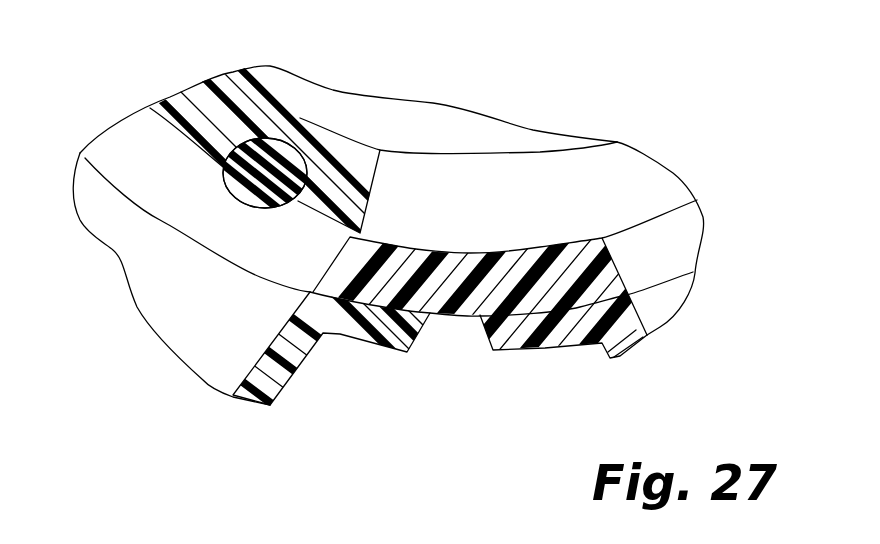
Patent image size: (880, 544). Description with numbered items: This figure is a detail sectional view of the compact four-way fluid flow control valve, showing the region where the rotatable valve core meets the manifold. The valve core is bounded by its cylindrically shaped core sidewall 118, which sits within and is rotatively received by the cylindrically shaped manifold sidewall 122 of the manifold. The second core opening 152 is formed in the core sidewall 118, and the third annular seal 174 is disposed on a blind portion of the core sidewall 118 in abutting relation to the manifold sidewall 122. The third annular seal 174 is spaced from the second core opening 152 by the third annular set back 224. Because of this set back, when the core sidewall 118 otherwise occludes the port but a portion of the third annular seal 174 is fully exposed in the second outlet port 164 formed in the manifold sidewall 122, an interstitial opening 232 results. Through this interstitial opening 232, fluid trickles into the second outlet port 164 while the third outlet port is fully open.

The core sidewall 118 is at (308, 117).
The third annular set back 224 is at (343, 183).
The second core opening 152 is at (507, 187).
The manifold sidewall 122 is at (480, 252).
The interstitial opening 232 is at (352, 238).
The third annular seal 174 is at (243, 193).
The second outlet port 164 is at (262, 250).